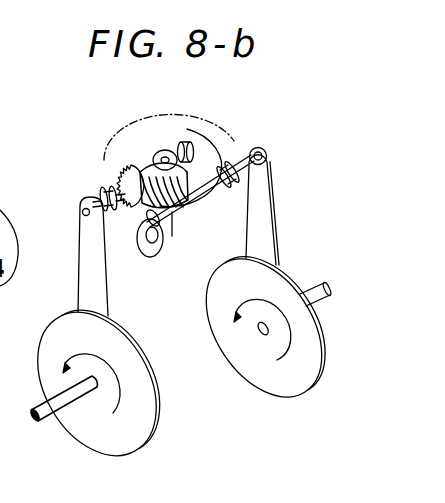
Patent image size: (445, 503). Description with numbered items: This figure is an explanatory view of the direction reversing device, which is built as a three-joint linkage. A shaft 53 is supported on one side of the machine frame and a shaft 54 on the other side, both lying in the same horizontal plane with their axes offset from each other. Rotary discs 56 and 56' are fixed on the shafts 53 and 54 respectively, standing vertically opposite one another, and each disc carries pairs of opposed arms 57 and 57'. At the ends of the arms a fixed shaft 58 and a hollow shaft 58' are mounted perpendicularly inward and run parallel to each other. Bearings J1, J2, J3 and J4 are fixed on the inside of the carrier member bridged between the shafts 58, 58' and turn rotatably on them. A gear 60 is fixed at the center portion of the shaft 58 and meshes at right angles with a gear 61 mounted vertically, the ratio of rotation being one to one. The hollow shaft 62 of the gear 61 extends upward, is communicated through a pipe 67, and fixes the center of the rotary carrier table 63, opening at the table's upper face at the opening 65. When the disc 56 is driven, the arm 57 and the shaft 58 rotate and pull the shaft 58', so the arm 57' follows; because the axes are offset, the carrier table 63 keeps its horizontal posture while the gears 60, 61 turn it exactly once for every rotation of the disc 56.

The shaft 53 is at (48, 408).
The shaft 54 is at (318, 296).
The rotary disc 56 is at (98, 382).
The rotary disc 56' is at (275, 327).
The arm 57 is at (113, 256).
The arm 57' is at (284, 210).
The shaft 58 is at (90, 181).
The hollow shaft 58' is at (265, 159).
The gear 60 is at (140, 165).
The gear 61 is at (206, 193).
The hollow shaft 62 is at (160, 150).
The rotary carrier table 63 is at (222, 138).
The opening 65 is at (168, 153).
The pipe 67 is at (163, 254).
The bearing J1 is at (187, 146).
The bearing J2 is at (109, 207).
The bearing J3 is at (270, 183).
The bearing J4 is at (164, 239).